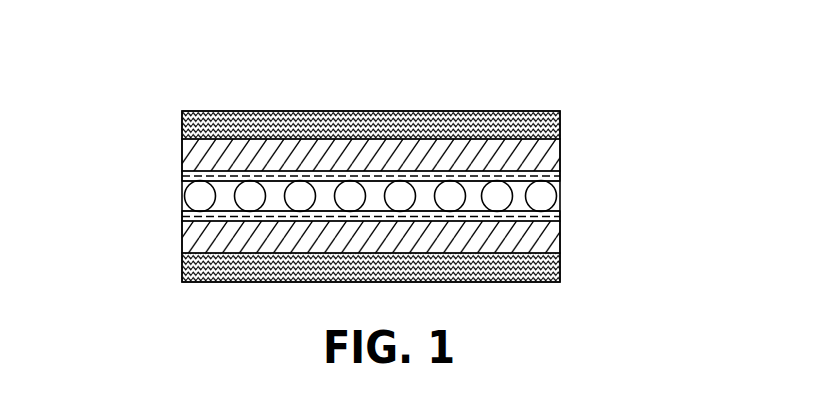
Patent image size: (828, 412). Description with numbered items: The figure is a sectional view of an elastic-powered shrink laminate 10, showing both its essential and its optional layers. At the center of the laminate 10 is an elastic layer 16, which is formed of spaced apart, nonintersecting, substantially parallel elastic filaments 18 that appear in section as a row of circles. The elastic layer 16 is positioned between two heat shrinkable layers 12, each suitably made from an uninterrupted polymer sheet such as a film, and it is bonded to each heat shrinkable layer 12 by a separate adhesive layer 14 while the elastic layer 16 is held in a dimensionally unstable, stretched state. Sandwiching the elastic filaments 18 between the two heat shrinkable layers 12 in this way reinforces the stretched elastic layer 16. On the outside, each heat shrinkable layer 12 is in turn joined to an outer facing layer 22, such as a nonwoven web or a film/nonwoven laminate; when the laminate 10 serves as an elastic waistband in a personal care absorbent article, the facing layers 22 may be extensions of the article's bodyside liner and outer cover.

The elastic-powered shrink laminate 10 is at (566, 110).
The heat shrinkable layer 12 is at (560, 158).
The adhesive layer 14 is at (560, 177).
The elastic layer 16 is at (183, 197).
The elastic filaments 18 is at (207, 197).
The facing layer 22 is at (182, 124).